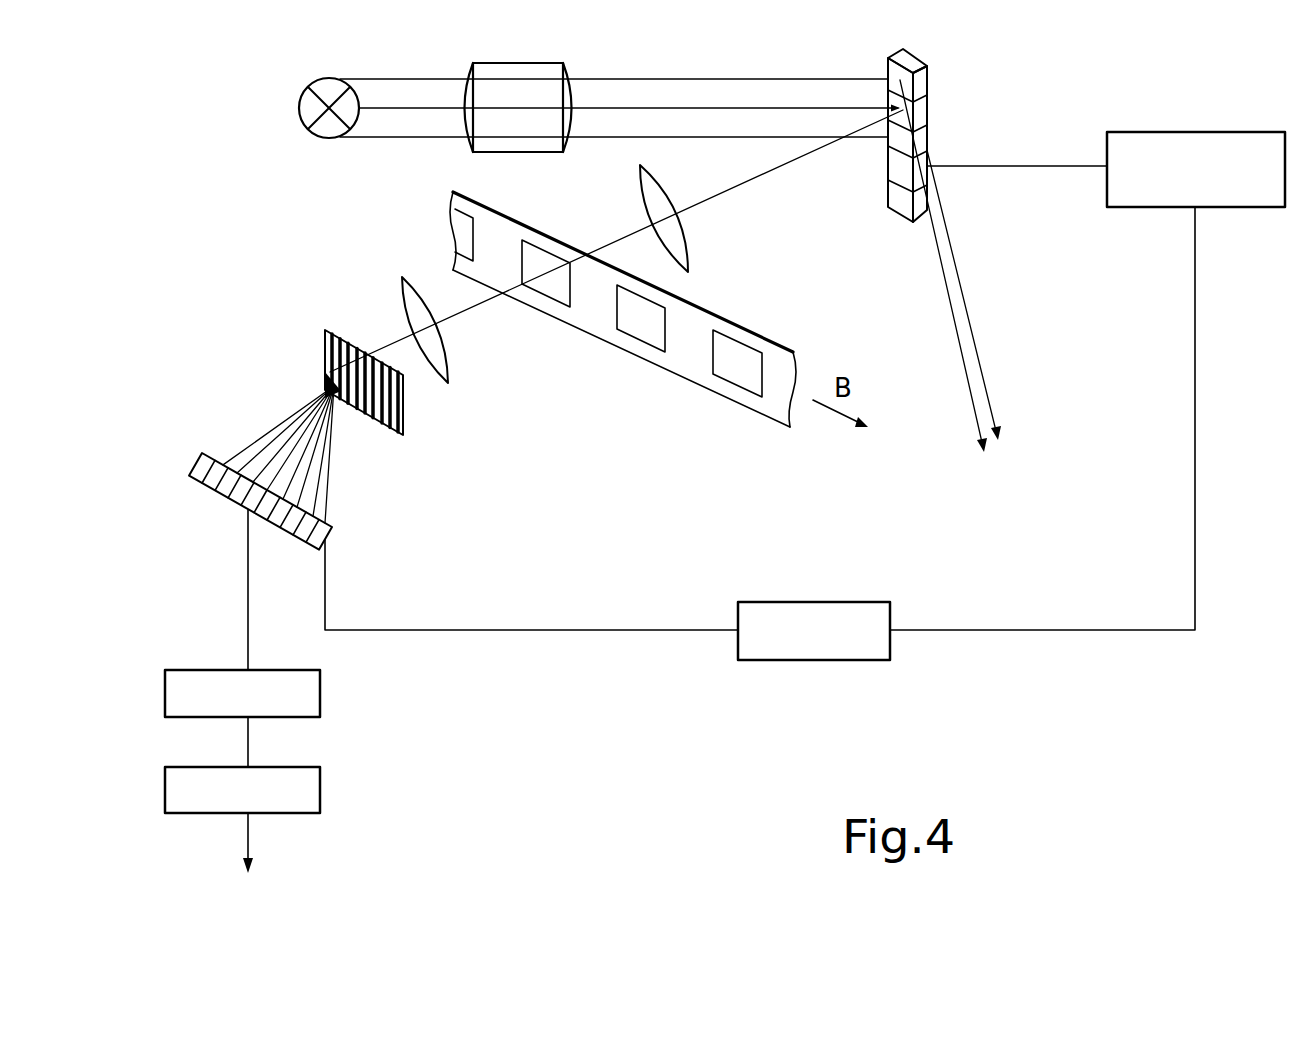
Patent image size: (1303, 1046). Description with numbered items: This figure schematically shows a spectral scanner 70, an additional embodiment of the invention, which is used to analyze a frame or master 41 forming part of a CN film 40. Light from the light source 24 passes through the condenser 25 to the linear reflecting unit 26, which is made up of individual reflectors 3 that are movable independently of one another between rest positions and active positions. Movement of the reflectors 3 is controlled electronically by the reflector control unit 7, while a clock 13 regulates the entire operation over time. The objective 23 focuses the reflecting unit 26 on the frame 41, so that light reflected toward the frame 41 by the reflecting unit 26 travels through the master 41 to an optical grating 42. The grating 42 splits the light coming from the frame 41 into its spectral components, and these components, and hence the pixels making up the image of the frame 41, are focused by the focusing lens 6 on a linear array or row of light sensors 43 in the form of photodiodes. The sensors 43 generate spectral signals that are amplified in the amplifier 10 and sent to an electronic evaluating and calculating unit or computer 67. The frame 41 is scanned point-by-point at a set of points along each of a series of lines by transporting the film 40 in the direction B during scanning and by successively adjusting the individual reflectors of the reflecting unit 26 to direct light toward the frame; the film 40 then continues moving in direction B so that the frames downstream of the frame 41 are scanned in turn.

The spectral scanner 70 is at (195, 231).
The light source 24 is at (323, 79).
The condenser 25 is at (535, 65).
The linear reflecting unit 26 is at (935, 115).
The reflector 3 is at (905, 107).
The reflector control unit 7 is at (1178, 132).
The objective 23 is at (690, 252).
The film 40 is at (623, 319).
The frame 41 is at (552, 295).
The focusing lens 6 is at (407, 303).
The optical grating 42 is at (325, 362).
The light sensors 43 is at (200, 458).
The clock 13 is at (785, 602).
The amplifier 10 is at (320, 690).
The computer 67 is at (320, 783).